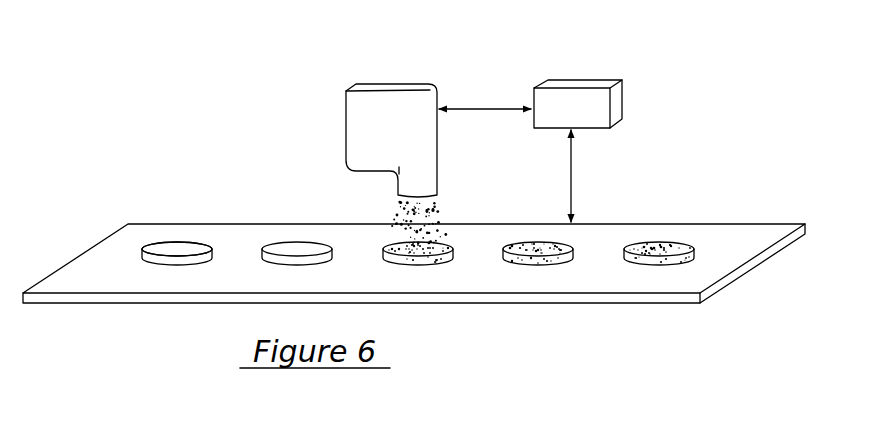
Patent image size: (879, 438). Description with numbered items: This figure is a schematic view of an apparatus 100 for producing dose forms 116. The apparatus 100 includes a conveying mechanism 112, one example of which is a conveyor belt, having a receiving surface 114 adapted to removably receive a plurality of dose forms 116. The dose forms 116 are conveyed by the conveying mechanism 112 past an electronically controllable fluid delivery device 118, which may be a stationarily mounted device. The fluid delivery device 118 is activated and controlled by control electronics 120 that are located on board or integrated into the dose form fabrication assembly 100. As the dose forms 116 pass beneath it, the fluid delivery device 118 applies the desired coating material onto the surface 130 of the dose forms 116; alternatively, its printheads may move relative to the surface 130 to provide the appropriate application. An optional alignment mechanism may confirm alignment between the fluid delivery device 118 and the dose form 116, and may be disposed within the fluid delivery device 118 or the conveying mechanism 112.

The apparatus 100 is at (681, 86).
The conveying mechanism 112 is at (492, 303).
The receiving surface 114 is at (614, 284).
The dose form 116 is at (179, 238).
The electronically controllable fluid delivery device 118 is at (438, 145).
The control electronics 120 is at (559, 121).
The surface 130 is at (142, 255).